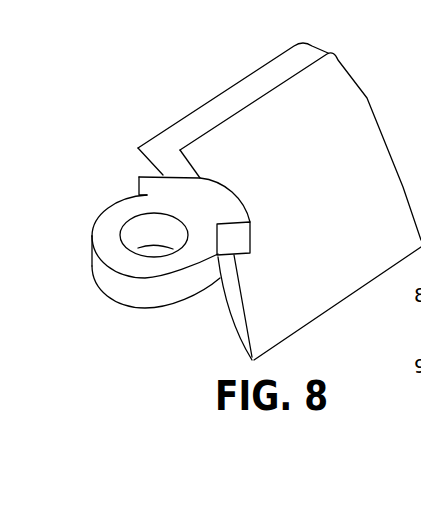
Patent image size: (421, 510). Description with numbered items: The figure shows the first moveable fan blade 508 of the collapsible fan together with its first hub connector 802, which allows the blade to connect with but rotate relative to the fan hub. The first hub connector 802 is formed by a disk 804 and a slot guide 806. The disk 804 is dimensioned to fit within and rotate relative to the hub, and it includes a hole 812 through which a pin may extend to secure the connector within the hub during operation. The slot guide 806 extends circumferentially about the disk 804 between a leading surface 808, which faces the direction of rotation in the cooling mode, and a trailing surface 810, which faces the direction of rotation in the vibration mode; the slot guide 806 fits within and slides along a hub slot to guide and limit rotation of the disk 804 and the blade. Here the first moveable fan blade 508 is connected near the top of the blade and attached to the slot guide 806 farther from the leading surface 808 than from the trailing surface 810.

The first moveable fan blade 508 is at (367, 98).
The first hub connector 802 is at (118, 306).
The disk 804 is at (93, 222).
The slot guide 806 is at (140, 175).
The leading surface 808 is at (230, 242).
The trailing surface 810 is at (138, 194).
The hole 812 is at (138, 235).